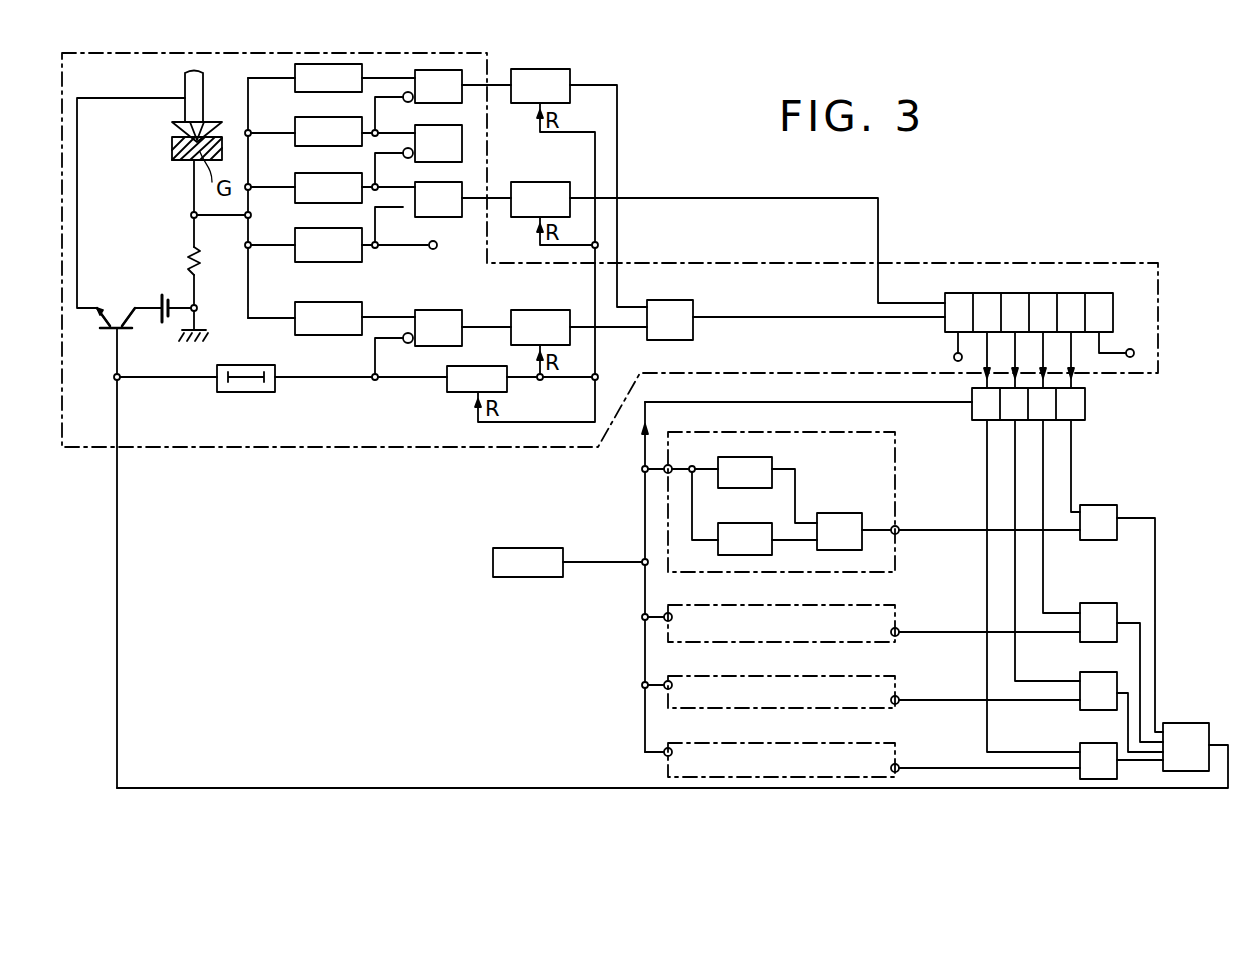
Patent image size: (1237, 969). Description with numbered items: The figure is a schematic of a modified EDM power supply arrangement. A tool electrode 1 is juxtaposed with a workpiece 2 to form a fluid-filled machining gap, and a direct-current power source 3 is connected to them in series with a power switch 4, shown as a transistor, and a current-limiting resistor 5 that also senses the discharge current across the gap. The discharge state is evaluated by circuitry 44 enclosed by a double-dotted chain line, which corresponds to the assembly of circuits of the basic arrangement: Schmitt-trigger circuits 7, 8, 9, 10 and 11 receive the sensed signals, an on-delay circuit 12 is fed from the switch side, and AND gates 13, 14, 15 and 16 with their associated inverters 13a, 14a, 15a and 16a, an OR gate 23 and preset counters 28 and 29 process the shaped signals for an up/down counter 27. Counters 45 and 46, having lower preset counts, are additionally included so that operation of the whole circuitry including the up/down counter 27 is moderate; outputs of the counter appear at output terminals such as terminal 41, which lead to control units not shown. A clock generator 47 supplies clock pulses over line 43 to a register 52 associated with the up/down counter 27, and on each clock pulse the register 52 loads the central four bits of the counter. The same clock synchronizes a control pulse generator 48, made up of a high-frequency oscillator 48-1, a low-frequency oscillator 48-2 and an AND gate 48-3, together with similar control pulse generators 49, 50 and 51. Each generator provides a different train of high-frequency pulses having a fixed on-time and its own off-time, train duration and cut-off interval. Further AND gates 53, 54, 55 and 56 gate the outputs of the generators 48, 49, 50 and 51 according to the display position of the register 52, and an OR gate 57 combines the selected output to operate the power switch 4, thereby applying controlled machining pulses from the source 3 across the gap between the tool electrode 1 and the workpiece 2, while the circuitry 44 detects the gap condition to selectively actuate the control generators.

The tool electrode 1 is at (172, 150).
The workpiece 2 is at (204, 137).
The direct-current power source 3 is at (163, 297).
The power switch 4 is at (106, 306).
The current-limiting resistor 5 is at (201, 258).
The Schmitt-trigger circuit 7 is at (295, 333).
The Schmitt-trigger circuit 8 is at (295, 90).
The Schmitt-trigger circuit 9 is at (295, 144).
The Schmitt-trigger circuit 10 is at (295, 201).
The Schmitt-trigger circuit 11 is at (295, 261).
The on-delay circuit 12 is at (226, 393).
The AND gate 13 is at (462, 75).
The inverter 13a is at (413, 100).
The AND gate 14 is at (462, 148).
The inverter 14a is at (413, 156).
The AND gate 15 is at (462, 212).
The inverter 15a is at (413, 210).
The AND gate 16 is at (432, 310).
The inverter 16a is at (404, 343).
The OR gate 23 is at (688, 300).
The up/down counter 27 is at (945, 335).
The preset counter 28 is at (450, 393).
The preset counter 29 is at (547, 309).
The output terminal 41 is at (1134, 353).
The output terminal 43 is at (808, 391).
The circuitry 44 is at (985, 264).
The counter 45 is at (568, 72).
The counter 46 is at (548, 182).
The clock generator 47 is at (525, 548).
The control pulse generator 48 is at (667, 531).
The high-frequency oscillator 48-1 is at (765, 460).
The low-frequency oscillator 48-2 is at (768, 523).
The AND gate 48-3 is at (840, 513).
The control pulse generator 49 is at (667, 631).
The control pulse generator 50 is at (667, 700).
The control pulse generator 51 is at (667, 766).
The register 52 is at (1090, 409).
The AND gate 53 is at (1112, 508).
The AND gate 54 is at (1100, 604).
The AND gate 55 is at (1086, 672).
The AND gate 56 is at (1086, 743).
The OR gate 57 is at (1188, 724).